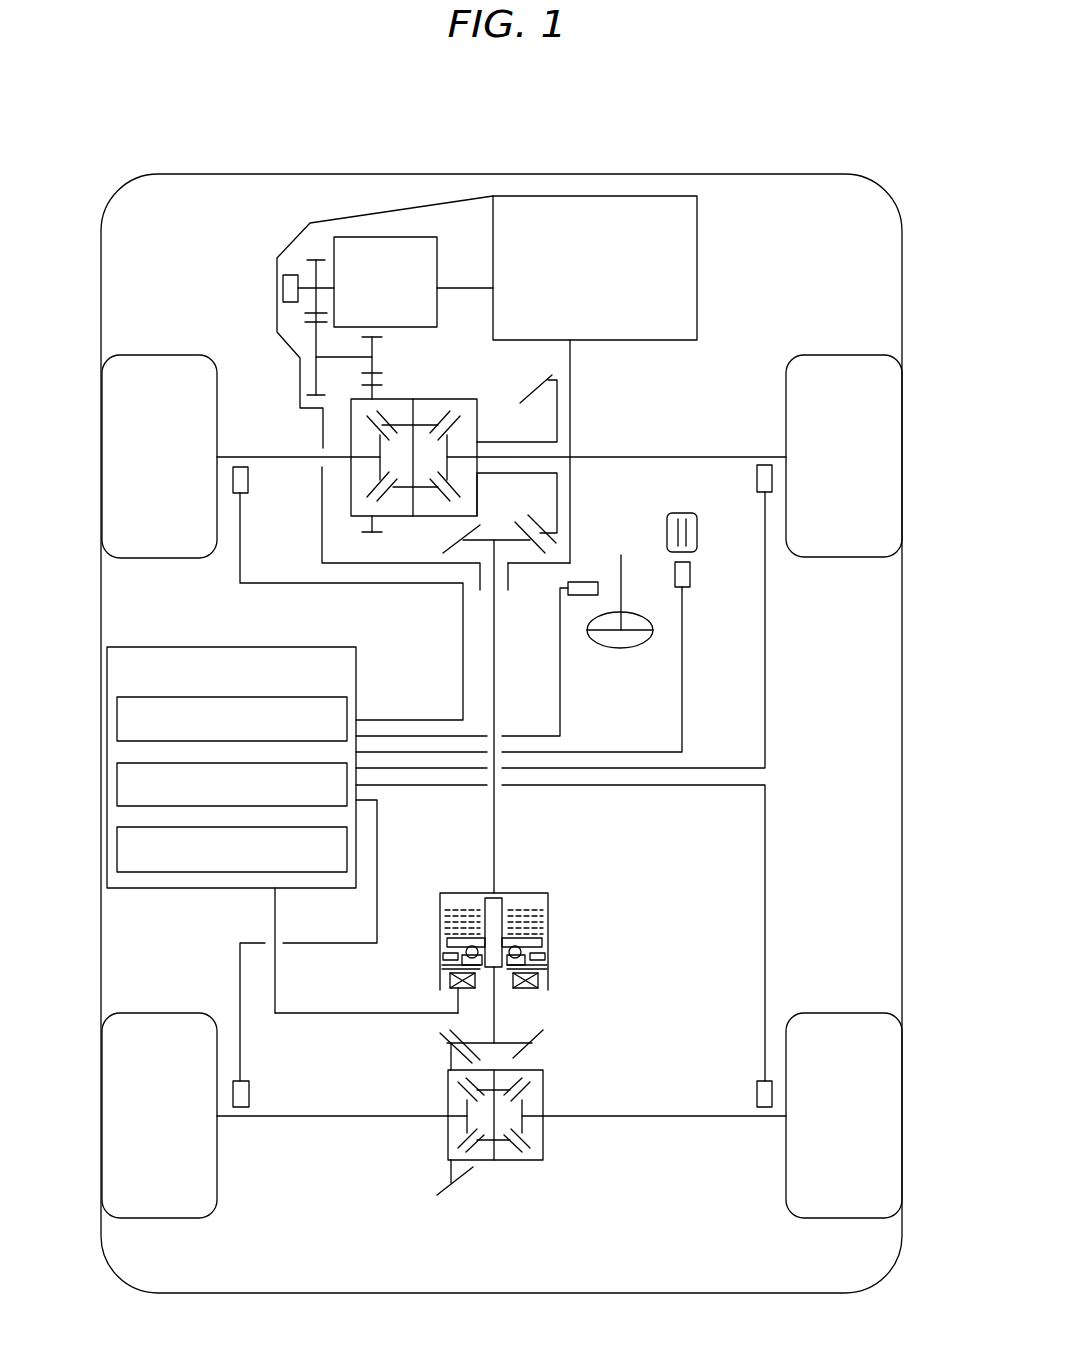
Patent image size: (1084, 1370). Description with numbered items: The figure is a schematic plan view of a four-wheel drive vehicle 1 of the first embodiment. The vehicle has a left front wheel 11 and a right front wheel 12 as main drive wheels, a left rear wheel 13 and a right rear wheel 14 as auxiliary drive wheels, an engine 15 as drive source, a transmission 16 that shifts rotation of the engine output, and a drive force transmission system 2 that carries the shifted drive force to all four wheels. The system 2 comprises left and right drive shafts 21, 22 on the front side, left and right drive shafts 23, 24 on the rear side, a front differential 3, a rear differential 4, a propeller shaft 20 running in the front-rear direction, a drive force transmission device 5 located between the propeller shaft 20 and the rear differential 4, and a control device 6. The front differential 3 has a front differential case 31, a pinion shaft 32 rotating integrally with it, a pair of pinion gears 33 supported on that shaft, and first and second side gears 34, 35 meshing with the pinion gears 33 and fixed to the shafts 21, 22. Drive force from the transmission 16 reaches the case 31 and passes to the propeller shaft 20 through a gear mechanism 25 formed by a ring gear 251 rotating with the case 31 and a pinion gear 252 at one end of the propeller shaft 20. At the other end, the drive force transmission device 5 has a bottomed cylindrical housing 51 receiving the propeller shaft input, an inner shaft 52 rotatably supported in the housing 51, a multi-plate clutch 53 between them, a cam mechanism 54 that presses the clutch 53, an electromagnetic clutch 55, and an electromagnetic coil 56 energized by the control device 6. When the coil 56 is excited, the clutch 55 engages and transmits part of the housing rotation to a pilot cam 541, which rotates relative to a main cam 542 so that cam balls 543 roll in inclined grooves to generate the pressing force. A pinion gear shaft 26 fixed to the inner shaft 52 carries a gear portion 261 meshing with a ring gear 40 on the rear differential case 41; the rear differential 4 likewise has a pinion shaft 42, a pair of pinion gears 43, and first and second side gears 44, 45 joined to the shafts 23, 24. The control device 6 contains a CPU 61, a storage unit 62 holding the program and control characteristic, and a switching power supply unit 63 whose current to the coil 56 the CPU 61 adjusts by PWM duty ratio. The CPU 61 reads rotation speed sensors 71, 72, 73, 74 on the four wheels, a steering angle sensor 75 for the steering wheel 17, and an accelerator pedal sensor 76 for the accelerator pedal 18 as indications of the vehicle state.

The four-wheel drive vehicle 1 is at (820, 128).
The drive force transmission system 2 is at (714, 376).
The front differential 3 is at (352, 522).
The rear differential 4 is at (555, 1153).
The drive force transmission device 5 is at (542, 869).
The control device 6 is at (163, 647).
The left front wheel 11 is at (118, 432).
The right front wheel 12 is at (892, 428).
The left rear wheel 13 is at (118, 1140).
The right rear wheel 14 is at (892, 1140).
The engine 15 is at (628, 196).
The transmission 16 is at (375, 237).
The steering wheel 17 is at (615, 649).
The accelerator pedal 18 is at (697, 531).
The propeller shaft 20 is at (496, 665).
The left drive shaft on front wheel side 21 is at (271, 457).
The right drive shaft on front wheel side 22 is at (613, 457).
The left drive shaft on rear wheel side 23 is at (352, 1117).
The right drive shaft on rear wheel side 24 is at (712, 1117).
The gear mechanism 25 is at (634, 478).
The ring gear 251 is at (532, 523).
The pinion gear 252 is at (547, 547).
The pinion gear shaft 26 is at (497, 1017).
The gear portion 261 is at (440, 1040).
The front differential case 31 is at (399, 398).
The pinion shaft 32 is at (412, 461).
The pinion gears 33 is at (428, 425).
The first side gear 34 is at (377, 470).
The second side gear 35 is at (447, 442).
The ring gear 40 is at (449, 1192).
The rear differential case 41 is at (520, 1161).
The pinion shaft 42 is at (493, 1110).
The pinion gears 43 is at (510, 1084).
The first side gear 44 is at (465, 1125).
The second side gear 45 is at (530, 1099).
The housing 51 is at (468, 892).
The inner shaft 52 is at (498, 898).
The multi-plate clutch 53 is at (545, 915).
The cam mechanism 54 is at (553, 940).
The pilot cam 541 is at (452, 970).
The main cam 542 is at (445, 943).
The cam balls 543 is at (443, 960).
The electromagnetic clutch 55 is at (548, 961).
The electromagnetic coil 56 is at (548, 979).
The CPU 61 is at (117, 720).
The storage unit 62 is at (117, 783).
The switching power supply unit 63 is at (117, 845).
The rotation speed sensor 71 is at (240, 466).
The rotation speed sensor 72 is at (763, 465).
The rotation speed sensor 73 is at (249, 1087).
The rotation speed sensor 74 is at (757, 1093).
The steering angle sensor 75 is at (586, 582).
The accelerator pedal sensor 76 is at (675, 579).